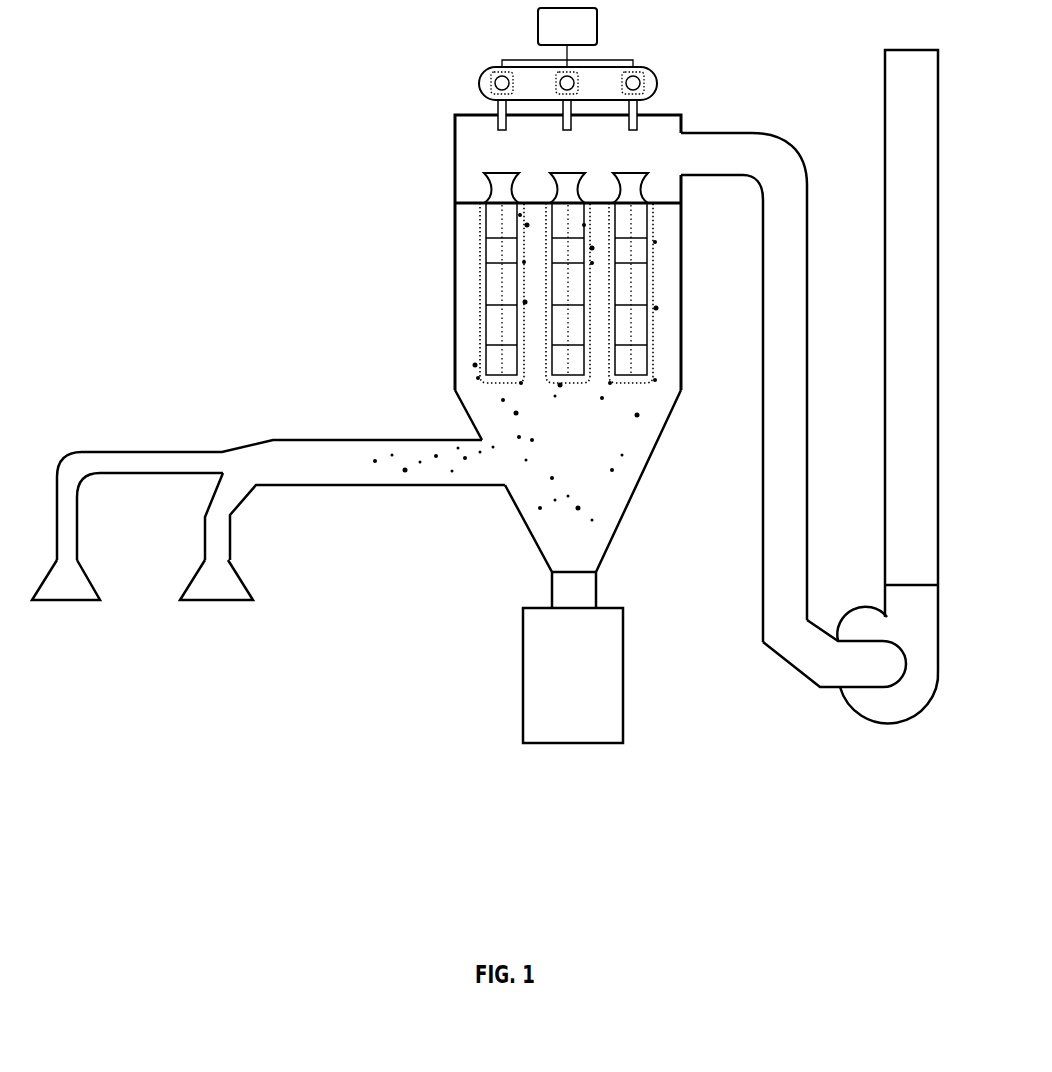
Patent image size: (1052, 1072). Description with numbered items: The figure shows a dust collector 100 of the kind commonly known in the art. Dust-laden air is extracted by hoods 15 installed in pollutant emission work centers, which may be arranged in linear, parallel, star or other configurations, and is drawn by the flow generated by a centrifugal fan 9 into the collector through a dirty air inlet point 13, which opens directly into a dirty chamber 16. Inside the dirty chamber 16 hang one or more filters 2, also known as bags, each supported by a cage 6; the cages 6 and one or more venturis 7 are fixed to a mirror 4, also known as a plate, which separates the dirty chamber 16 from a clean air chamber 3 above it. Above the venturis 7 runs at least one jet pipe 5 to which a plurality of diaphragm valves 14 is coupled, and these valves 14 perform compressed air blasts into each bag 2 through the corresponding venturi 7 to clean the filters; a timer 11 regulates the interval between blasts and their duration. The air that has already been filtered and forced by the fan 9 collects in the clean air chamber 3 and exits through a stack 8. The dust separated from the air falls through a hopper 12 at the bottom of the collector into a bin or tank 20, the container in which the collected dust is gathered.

The dust collector 100 is at (485, 415).
The filter 2 is at (502, 363).
The clean air chamber 3 is at (620, 152).
The mirror 4 is at (658, 210).
The jet pipe 5 is at (497, 128).
The cage 6 is at (482, 270).
The venturi 7 is at (487, 183).
The stack 8 is at (885, 113).
The centrifugal fan 9 is at (887, 720).
The timer 11 is at (537, 27).
The hopper 12 is at (607, 555).
The dirty air inlet point 13 is at (477, 488).
The diaphragm valve 14 is at (645, 71).
The hood 15 is at (67, 603).
The dirty chamber 16 is at (567, 440).
The bin 20 is at (575, 745).